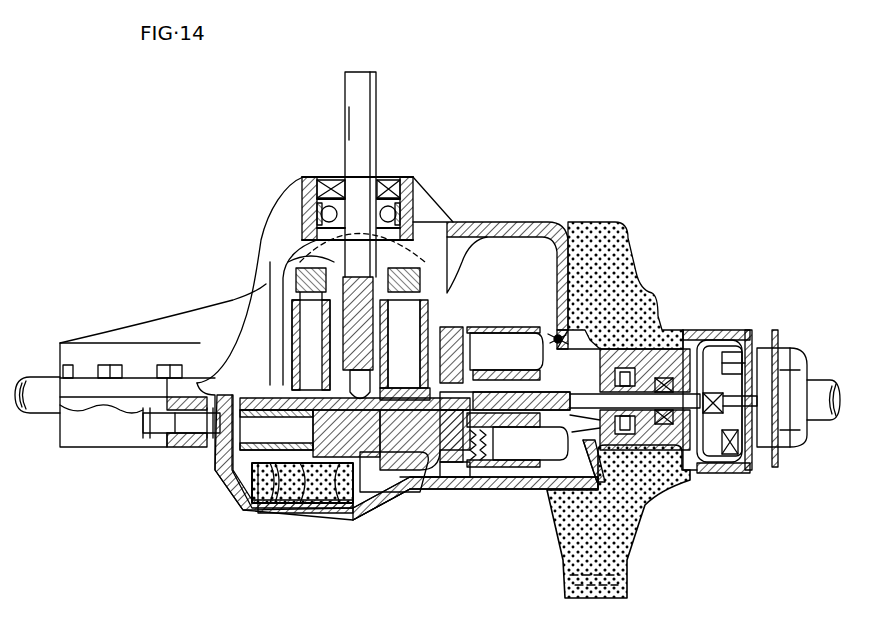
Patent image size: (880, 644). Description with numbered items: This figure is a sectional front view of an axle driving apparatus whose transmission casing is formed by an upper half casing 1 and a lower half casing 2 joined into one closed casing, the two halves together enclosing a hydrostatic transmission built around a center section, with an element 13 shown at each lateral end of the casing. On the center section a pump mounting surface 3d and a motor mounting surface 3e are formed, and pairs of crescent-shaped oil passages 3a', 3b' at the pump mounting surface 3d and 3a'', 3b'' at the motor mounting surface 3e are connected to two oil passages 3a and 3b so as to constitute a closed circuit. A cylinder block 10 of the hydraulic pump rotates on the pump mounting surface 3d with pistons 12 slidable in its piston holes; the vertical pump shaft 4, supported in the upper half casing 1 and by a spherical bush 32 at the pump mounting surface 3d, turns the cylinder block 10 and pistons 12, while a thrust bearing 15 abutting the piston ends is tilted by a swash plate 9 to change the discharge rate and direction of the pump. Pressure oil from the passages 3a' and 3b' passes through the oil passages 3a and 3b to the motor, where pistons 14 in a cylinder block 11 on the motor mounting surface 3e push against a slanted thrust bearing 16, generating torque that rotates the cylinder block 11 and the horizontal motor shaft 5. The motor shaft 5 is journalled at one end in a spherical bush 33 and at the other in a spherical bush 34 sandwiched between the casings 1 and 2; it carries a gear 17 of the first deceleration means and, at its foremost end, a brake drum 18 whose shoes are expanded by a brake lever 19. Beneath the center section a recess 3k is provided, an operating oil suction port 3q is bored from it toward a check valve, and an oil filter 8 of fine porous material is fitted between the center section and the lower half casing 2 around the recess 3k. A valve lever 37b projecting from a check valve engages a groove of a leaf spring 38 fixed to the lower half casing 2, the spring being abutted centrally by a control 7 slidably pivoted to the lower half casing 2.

The upper half casing 1 is at (163, 340).
The lower half casing 2 is at (125, 447).
The oil passage 3a is at (411, 527).
The crescent-shaped oil passage 3a' is at (292, 524).
The crescent-shaped oil passage 3a'' is at (461, 522).
The oil passage 3b is at (397, 593).
The crescent-shaped oil passage 3b' is at (298, 535).
The crescent-shaped oil passage 3b'' is at (465, 597).
The pump mounting surface 3d is at (355, 390).
The motor mounting surface 3e is at (470, 467).
The recess 3k is at (357, 505).
The operating oil suction port 3q is at (258, 505).
The pump shaft 4 is at (377, 106).
The motor shaft 5 is at (598, 401).
The control 7 is at (137, 410).
The oil filter 8 is at (310, 503).
The swash plate 9 is at (313, 250).
The cylinder block 10 is at (427, 317).
The cylinder block 11 is at (520, 490).
The piston 12 is at (433, 300).
The tie rod 13 is at (35, 413).
The piston 14 is at (491, 394).
The thrust bearing 15 is at (292, 304).
The thrust bearing 16 is at (559, 344).
The gear 17 is at (633, 352).
The brake drum 18 is at (697, 475).
The brake lever 19 is at (775, 330).
The spherical bush 32 is at (394, 472).
The spherical bush 33 is at (440, 487).
The spherical bush 34 is at (660, 349).
The valve lever 37b is at (210, 482).
The leaf spring 38 is at (207, 449).